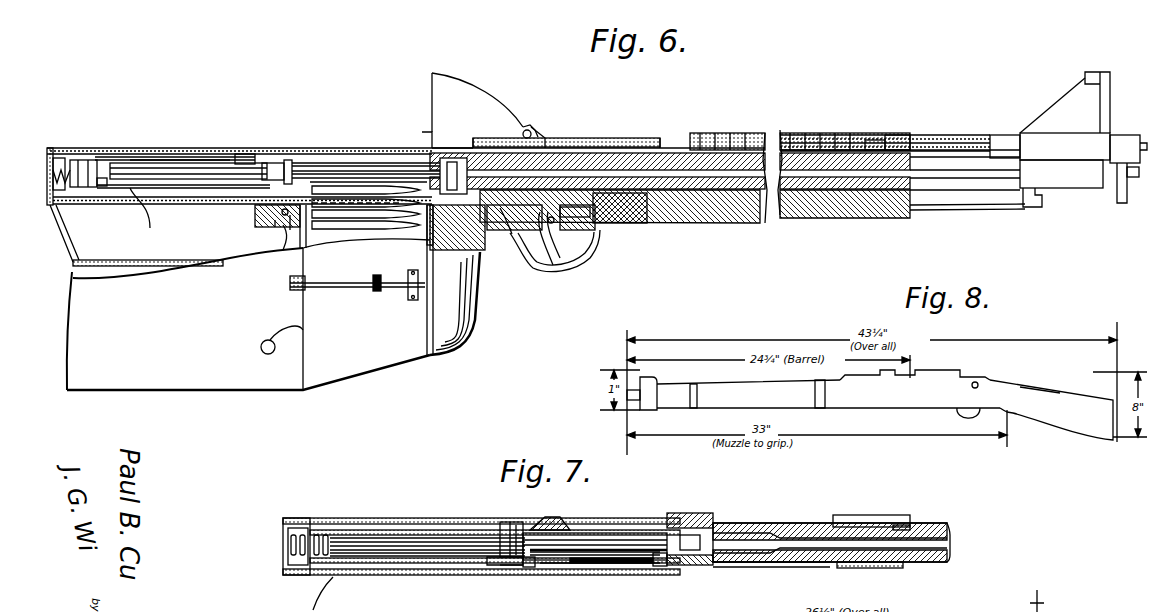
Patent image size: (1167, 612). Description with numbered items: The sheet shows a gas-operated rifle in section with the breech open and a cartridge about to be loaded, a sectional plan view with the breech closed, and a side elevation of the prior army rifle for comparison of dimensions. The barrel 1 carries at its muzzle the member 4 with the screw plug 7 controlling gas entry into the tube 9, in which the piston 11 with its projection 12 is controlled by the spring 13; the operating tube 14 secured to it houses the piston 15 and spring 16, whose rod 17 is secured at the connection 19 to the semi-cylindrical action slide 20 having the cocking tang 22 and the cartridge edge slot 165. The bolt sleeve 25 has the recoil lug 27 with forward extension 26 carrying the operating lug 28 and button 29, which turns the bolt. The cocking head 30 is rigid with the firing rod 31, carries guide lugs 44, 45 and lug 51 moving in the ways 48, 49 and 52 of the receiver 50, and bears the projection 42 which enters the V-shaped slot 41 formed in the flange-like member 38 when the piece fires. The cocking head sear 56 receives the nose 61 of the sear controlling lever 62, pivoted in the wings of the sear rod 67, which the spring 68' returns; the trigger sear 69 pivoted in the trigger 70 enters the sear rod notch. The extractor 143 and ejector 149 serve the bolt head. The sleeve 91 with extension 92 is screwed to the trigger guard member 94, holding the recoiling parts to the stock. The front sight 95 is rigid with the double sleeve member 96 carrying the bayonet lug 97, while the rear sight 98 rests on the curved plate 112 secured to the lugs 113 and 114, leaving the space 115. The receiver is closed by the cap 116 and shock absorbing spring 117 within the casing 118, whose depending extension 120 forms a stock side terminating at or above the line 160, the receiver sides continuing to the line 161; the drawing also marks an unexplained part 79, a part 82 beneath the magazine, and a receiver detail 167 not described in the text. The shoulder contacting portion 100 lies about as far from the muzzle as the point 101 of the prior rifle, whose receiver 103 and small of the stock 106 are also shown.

In FIG. 6, the barrel 1 is at (700, 190).
In FIG. 7, the barrel 1 is at (948, 536).
In FIG. 6, the member 4 is at (1130, 178).
In FIG. 6, the screw plug 7 is at (1140, 140).
In FIG. 6, the tube 9 is at (1000, 140).
In FIG. 6, the piston 11 is at (893, 142).
In FIG. 6, the projection 12 is at (875, 142).
In FIG. 6, the spring 13 is at (855, 140).
In FIG. 6, the operating tube 14 is at (795, 140).
In FIG. 6, the piston 15 is at (832, 140).
In FIG. 6, the spring 16 is at (748, 140).
In FIG. 6, the rod 17 is at (612, 148).
In FIG. 6, the connection 19 is at (489, 142).
In FIG. 6, the action slide 20 is at (334, 163).
In FIG. 7, the action slide 20 is at (585, 572).
In FIG. 6, the cocking tang 22 is at (130, 158).
In FIG. 6, the bolt sleeve 25 is at (190, 172).
In FIG. 7, the bolt sleeve 25 is at (592, 540).
In FIG. 7, the forward extension 26 is at (610, 575).
In FIG. 6, the guide or recoil lug 27 is at (176, 158).
In FIG. 7, the guide or recoil lug 27 is at (553, 573).
In FIG. 6, the operating lug 28 is at (271, 164).
In FIG. 7, the operating lug 28 is at (660, 572).
In FIG. 6, the button or cap 29 is at (240, 154).
In FIG. 7, the cocking head 30 is at (520, 530).
In FIG. 6, the firing rod 31 is at (142, 214).
In FIG. 7, the flange-like member 38 is at (529, 570).
In FIG. 6, the V-shaped slot 41 is at (133, 188).
In FIG. 6, the projection 42 is at (105, 187).
In FIG. 6, the guide lug 44 is at (85, 160).
In FIG. 7, the guide lug 44 is at (490, 570).
In FIG. 7, the guide lug 45 is at (508, 522).
In FIG. 6, the slot or way 48 is at (360, 173).
In FIG. 7, the slot or way 48 is at (400, 536).
In FIG. 7, the slot or way 49 is at (395, 572).
In FIG. 7, the receiver 50 is at (440, 536).
In FIG. 6, the lug 51 is at (53, 176).
In FIG. 7, the lug 51 is at (510, 574).
In FIG. 7, the way 52 is at (400, 576).
In FIG. 6, the cocking head sear 56 is at (257, 210).
In FIG. 6, the nose 61 is at (280, 218).
In FIG. 6, the sear controlling lever 62 is at (283, 225).
In FIG. 6, the sear rod 67 is at (513, 233).
In FIG. 6, the spring 68' is at (276, 249).
In FIG. 6, the trigger sear 69 is at (545, 210).
In FIG. 6, the trigger 70 is at (554, 266).
In FIG. 6, the sling swivel 79 is at (262, 342).
In FIG. 6, the magazine rod 82 is at (375, 291).
In FIG. 6, the sleeve 91 is at (640, 220).
In FIG. 7, the sleeve 91 is at (905, 527).
In FIG. 6, the extension 92 is at (605, 225).
In FIG. 6, the trigger guard member 94 is at (594, 258).
In FIG. 6, the front sight 95 is at (1060, 107).
In FIG. 6, the double sleeve member 96 is at (1073, 143).
In FIG. 6, the bayonet lug 97 is at (1032, 207).
In FIG. 6, the rear sight 98 is at (457, 92).
In FIG. 7, the rear sight 98 is at (986, 601).
In FIG. 6, the shoulder contacting portion 100 is at (68, 275).
In FIG. 8, the point 101 is at (1040, 391).
In FIG. 8, the receiver 103 is at (960, 377).
In FIG. 8, the small of the stock 106 is at (1018, 398).
In FIG. 6, the curved plate 112 is at (593, 140).
In FIG. 7, the lug 113 is at (688, 514).
In FIG. 7, the lug 114 is at (870, 515).
In FIG. 6, the space 115 is at (560, 140).
In FIG. 6, the closing cap 116 is at (47, 165).
In FIG. 7, the closing cap 116 is at (284, 545).
In FIG. 6, the shock absorbing spring 117 is at (62, 162).
In FIG. 7, the shock absorbing spring 117 is at (292, 560).
In FIG. 6, the casing 118 is at (111, 148).
In FIG. 7, the casing 118 is at (366, 520).
In FIG. 6, the depending extension 120 is at (85, 330).
In FIG. 6, the extractor 143 is at (289, 161).
In FIG. 7, the extractor 143 is at (690, 572).
In FIG. 7, the ejector 149 is at (560, 522).
In FIG. 6, the line 160 is at (305, 316).
In FIG. 6, the line 161 is at (430, 334).
In FIG. 7, the cartridge edge slot 165 is at (775, 568).
In FIG. 6, the receiver step 167 is at (440, 148).